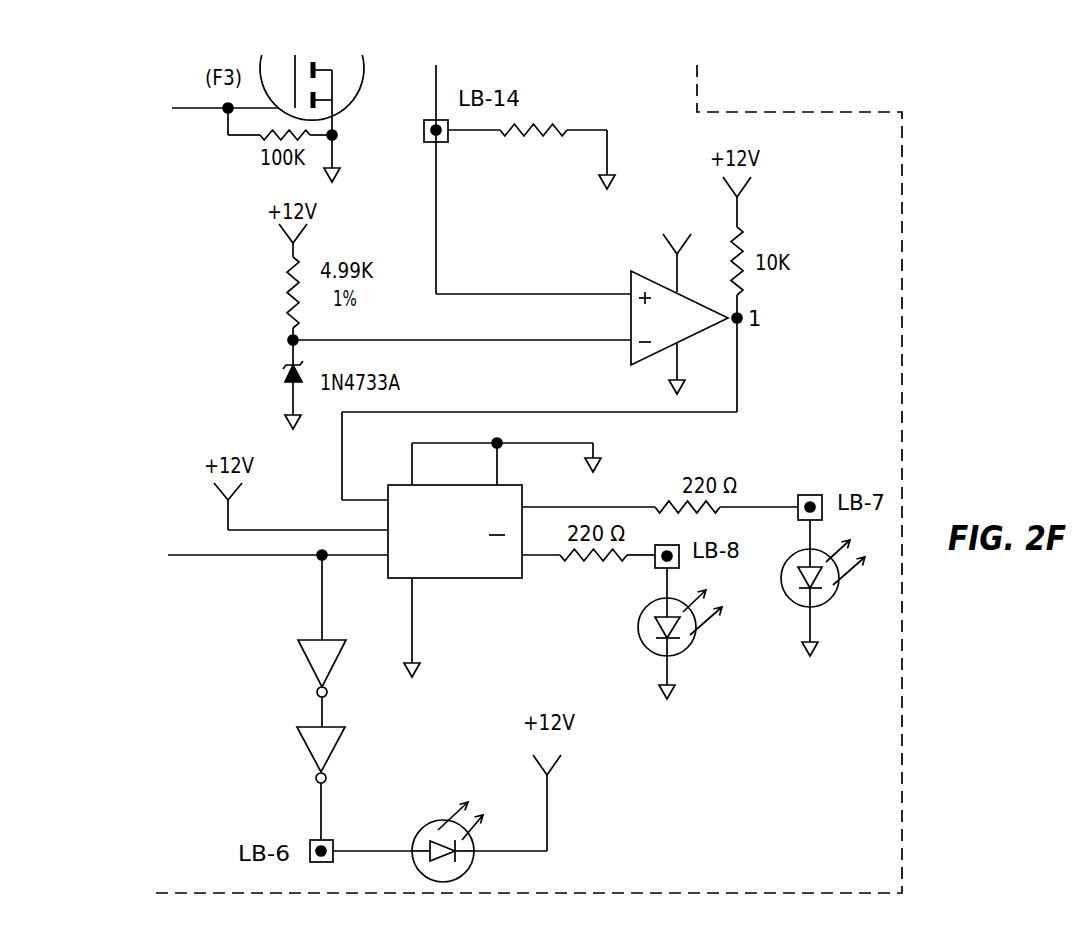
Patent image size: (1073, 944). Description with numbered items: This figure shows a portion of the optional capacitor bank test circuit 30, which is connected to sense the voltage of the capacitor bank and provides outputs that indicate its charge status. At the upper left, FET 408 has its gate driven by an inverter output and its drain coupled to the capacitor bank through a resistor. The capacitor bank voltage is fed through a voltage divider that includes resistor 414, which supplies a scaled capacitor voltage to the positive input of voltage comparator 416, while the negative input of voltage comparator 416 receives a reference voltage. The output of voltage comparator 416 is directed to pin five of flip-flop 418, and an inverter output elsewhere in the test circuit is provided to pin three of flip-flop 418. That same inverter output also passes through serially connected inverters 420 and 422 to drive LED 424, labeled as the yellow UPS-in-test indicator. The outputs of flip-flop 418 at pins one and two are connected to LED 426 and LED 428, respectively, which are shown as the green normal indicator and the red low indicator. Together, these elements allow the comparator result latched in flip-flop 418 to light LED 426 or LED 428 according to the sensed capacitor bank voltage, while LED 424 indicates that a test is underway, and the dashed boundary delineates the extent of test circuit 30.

The capacitor bank test circuit 30 is at (905, 157).
The FET 408 is at (362, 82).
The resistor 414 is at (531, 125).
The voltage comparator 416 is at (652, 275).
The flip-flop 418 is at (488, 580).
The inverter 420 is at (334, 664).
The inverter 422 is at (333, 750).
The LED 424 is at (466, 870).
The LED 426 is at (835, 590).
The LED 428 is at (688, 645).